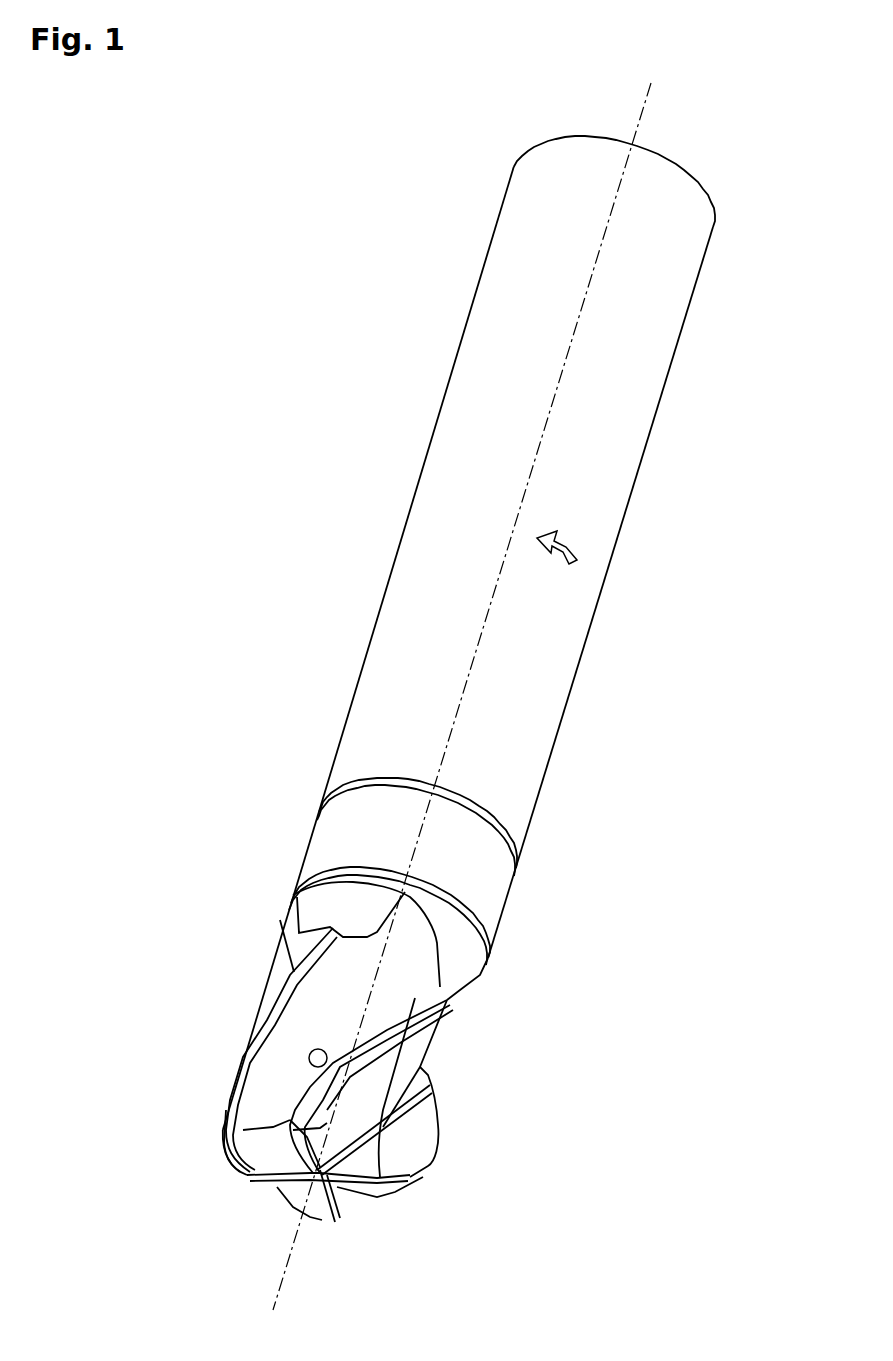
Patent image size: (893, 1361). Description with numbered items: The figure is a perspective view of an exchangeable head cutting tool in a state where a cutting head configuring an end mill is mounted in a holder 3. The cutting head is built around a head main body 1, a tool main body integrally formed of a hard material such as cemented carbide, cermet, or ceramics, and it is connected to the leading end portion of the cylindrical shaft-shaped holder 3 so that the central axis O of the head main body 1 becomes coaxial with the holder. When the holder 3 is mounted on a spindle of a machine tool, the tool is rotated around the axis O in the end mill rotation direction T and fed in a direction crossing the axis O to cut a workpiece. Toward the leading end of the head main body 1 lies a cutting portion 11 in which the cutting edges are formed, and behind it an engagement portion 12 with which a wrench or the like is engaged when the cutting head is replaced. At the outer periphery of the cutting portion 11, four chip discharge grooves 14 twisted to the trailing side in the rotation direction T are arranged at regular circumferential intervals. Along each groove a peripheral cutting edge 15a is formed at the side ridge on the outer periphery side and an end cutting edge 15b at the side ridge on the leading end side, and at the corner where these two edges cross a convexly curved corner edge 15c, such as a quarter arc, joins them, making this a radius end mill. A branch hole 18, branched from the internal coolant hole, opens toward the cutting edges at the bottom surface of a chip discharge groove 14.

The head main body 1 is at (222, 908).
The holder 3 is at (334, 577).
The cutting portion 11 is at (204, 1077).
The engagement portion 12 is at (334, 912).
The chip discharge groove 14 is at (272, 1080).
The peripheral cutting edge 15a is at (240, 1053).
The end cutting edge 15b is at (270, 1147).
The corner edge 15c is at (290, 1115).
The branch hole 18 is at (318, 1049).
The central axis O is at (648, 102).
The end mill rotation direction T is at (557, 541).